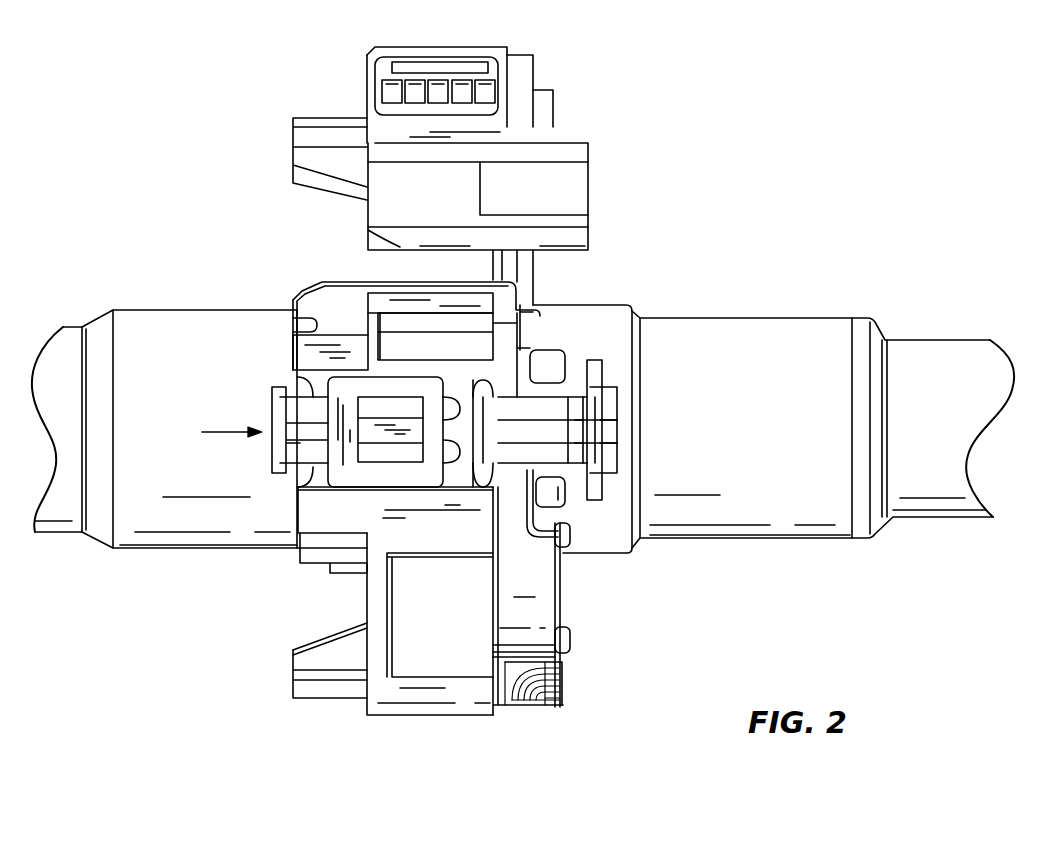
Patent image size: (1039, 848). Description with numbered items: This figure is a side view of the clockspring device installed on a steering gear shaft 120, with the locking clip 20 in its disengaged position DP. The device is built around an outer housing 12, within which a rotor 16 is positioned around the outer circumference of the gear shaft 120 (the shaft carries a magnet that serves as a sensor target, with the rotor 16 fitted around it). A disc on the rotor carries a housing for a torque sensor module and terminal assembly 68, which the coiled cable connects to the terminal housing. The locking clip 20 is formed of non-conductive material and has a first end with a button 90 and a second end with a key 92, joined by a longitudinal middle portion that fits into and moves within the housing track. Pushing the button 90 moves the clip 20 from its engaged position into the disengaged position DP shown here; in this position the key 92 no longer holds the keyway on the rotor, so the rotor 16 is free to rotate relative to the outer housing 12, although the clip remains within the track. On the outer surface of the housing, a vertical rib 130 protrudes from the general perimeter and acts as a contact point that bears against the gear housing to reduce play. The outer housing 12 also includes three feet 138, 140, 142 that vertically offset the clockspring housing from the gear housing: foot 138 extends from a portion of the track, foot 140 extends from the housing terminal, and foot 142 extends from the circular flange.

The outer housing 12 is at (423, 697).
The rotor 16 is at (537, 272).
The locking clip 20 is at (370, 433).
The torque sensor module and terminal assembly 68 is at (543, 700).
The button 90 is at (268, 408).
The key 92 is at (612, 435).
The gear shaft 120 is at (787, 343).
The rib 130 is at (303, 291).
The foot 138 is at (330, 323).
The foot 140 is at (332, 113).
The foot 142 is at (323, 698).
The disengaged position DP is at (598, 345).